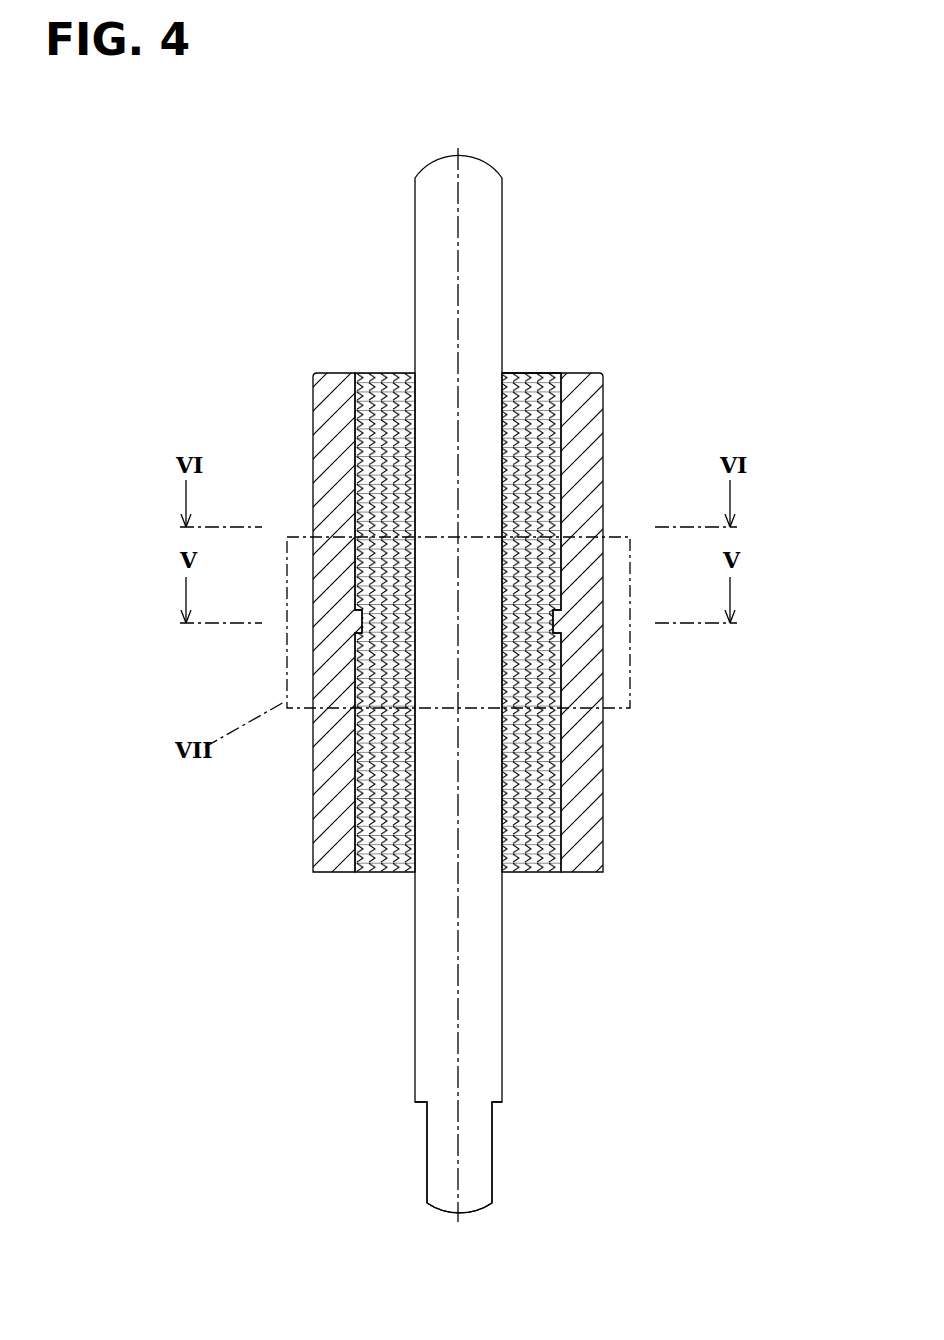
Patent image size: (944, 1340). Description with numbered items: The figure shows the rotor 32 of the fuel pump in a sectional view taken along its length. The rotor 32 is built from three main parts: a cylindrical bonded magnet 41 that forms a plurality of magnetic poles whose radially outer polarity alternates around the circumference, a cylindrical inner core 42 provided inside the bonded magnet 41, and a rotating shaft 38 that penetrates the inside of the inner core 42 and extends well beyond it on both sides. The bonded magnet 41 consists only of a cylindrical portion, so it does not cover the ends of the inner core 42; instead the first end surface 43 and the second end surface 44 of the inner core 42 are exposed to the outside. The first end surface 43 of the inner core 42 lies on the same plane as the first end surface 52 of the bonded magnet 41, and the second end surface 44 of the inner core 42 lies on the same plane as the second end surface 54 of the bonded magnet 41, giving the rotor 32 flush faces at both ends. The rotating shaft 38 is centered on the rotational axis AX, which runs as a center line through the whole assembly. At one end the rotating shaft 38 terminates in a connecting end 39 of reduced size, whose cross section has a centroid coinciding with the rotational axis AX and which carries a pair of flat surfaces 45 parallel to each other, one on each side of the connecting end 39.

The rotational axis AX is at (458, 202).
The rotor 32 is at (410, 621).
The rotating shaft 38 is at (432, 913).
The connecting end 39 is at (475, 1195).
The bonded magnet 41 is at (333, 807).
The inner core 42 is at (367, 843).
The first end surface 43 is at (532, 873).
The second end surface 44 is at (530, 372).
The flat surfaces 45 is at (427, 1148).
The first end surface 52 is at (583, 873).
The second end surface 54 is at (580, 372).